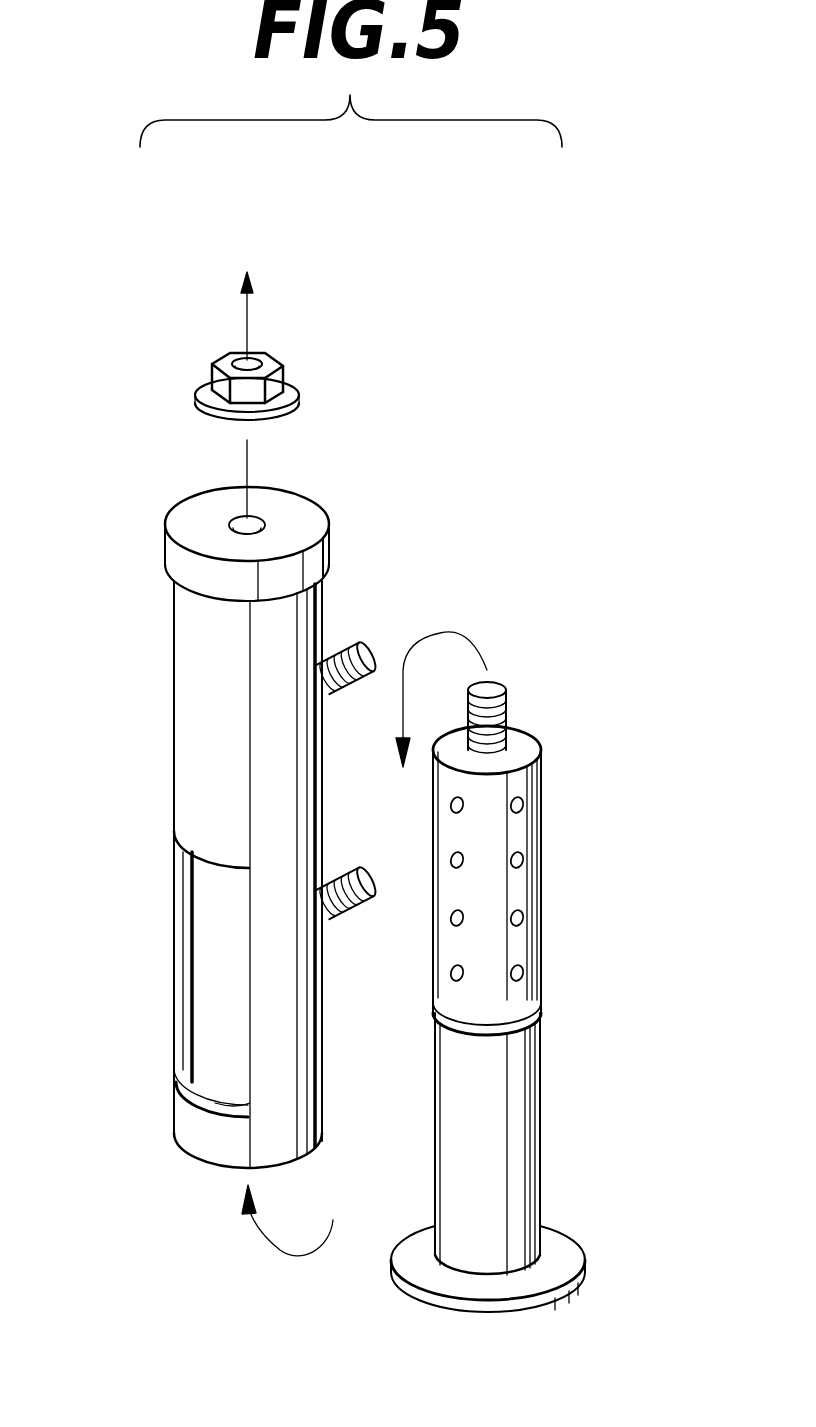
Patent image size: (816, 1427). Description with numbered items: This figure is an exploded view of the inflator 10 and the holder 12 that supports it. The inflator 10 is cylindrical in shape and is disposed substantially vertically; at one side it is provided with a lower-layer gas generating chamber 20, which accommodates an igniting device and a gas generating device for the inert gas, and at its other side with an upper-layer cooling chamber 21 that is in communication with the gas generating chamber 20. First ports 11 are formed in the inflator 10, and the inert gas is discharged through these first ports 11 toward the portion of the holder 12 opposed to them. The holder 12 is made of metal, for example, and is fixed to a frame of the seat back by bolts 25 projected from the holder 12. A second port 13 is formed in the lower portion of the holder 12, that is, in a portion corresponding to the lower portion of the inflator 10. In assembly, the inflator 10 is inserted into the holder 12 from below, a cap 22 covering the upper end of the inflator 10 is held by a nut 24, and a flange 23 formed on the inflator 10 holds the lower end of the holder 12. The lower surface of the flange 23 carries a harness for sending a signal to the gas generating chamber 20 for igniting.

The inflator 10 is at (578, 967).
The first ports 11 is at (522, 862).
The holder 12 is at (302, 627).
The second port 13 is at (183, 982).
The gas generating chamber 20 is at (508, 1072).
The cooling chamber 21 is at (541, 813).
The cap 22 is at (293, 498).
The flange 23 is at (560, 1237).
The nut 24 is at (283, 367).
The bolts 25 is at (335, 690).